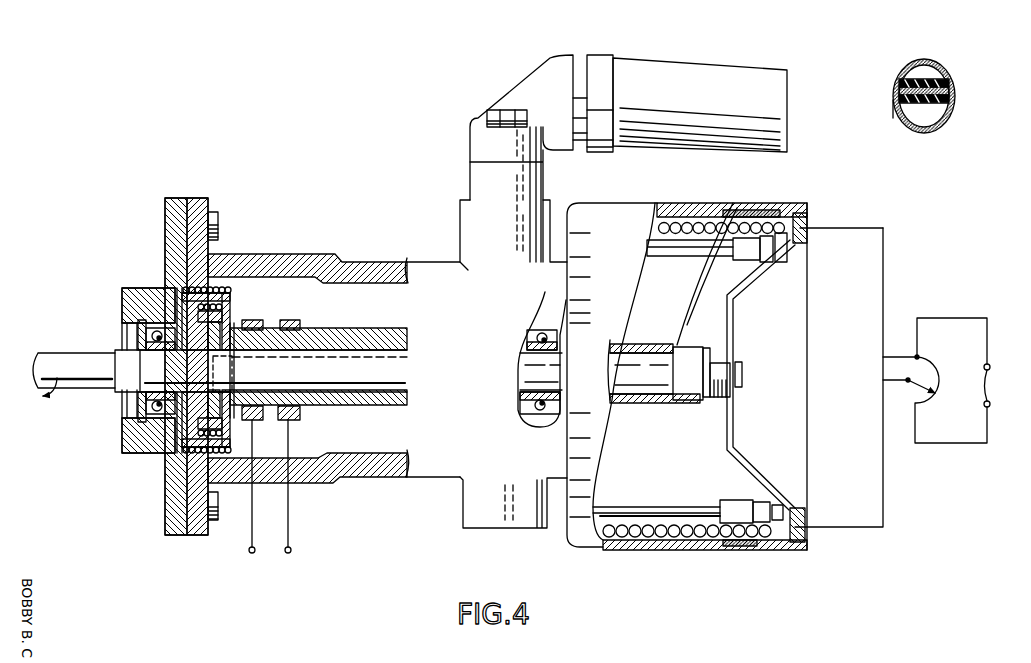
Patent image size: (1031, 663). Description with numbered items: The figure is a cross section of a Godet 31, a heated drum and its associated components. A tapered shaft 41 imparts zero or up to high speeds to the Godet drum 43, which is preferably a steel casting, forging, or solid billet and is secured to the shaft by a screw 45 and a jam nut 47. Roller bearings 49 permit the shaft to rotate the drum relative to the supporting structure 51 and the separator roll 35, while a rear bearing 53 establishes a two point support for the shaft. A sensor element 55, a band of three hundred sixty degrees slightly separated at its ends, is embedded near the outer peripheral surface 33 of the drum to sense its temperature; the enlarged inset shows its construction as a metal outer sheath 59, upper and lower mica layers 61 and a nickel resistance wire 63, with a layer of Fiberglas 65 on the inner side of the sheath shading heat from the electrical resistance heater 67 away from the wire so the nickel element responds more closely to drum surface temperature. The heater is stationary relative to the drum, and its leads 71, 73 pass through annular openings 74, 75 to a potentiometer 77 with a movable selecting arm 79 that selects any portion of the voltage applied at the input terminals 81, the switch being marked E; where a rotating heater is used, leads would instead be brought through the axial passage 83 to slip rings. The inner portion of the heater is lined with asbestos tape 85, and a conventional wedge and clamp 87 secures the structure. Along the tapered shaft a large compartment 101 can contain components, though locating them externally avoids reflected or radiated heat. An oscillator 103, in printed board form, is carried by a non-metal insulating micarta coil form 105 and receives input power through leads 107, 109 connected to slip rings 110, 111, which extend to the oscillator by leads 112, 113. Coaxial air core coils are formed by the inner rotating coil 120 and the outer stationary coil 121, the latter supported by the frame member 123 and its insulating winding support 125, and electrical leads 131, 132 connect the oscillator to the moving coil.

The Godet 31 is at (782, 552).
The outer peripheral surface 33 is at (693, 205).
The separator roll 35 is at (685, 72).
The tapered shaft 41 is at (72, 357).
The Godet drum 43 is at (650, 545).
The screw 45 is at (743, 372).
The jam nut 47 is at (720, 357).
The roller bearings 49 is at (535, 335).
The supporting structure 51 is at (473, 185).
The rear bearing 53 is at (135, 393).
The sensor element 55 is at (893, 120).
The metal outer sheath 59 is at (950, 68).
The mica layers 61 is at (950, 102).
The nickel resistance wire 63 is at (955, 93).
The Fiberglas layer 65 is at (955, 128).
The electrical resistance heater 67 is at (730, 240).
The lead 71 is at (870, 527).
The lead 73 is at (843, 228).
The annular opening 74 is at (808, 225).
The annular opening 75 is at (802, 508).
The potentiometer 77 is at (940, 388).
The wiper arm 79 is at (918, 390).
The input terminals 81 is at (984, 367).
The switch E is at (993, 385).
The axial passage 83 is at (643, 357).
The asbestos tape 85 is at (683, 533).
The wedge and clamp 87 is at (738, 520).
The large compartment 101 is at (385, 316).
The oscillator 103 is at (207, 398).
The micarta coil form 105 is at (198, 413).
The lead 107 is at (252, 518).
The lead 109 is at (288, 522).
The slip ring 110 is at (253, 418).
The slip ring 111 is at (298, 417).
The lead 112 is at (273, 400).
The lead 113 is at (238, 400).
The inner rotating coil 120 is at (232, 307).
The outer stationary coil 121 is at (213, 288).
The frame member 123 is at (170, 262).
The insulating winding support 125 is at (163, 288).
The electrical lead 131 is at (175, 445).
The electrical lead 132 is at (227, 400).